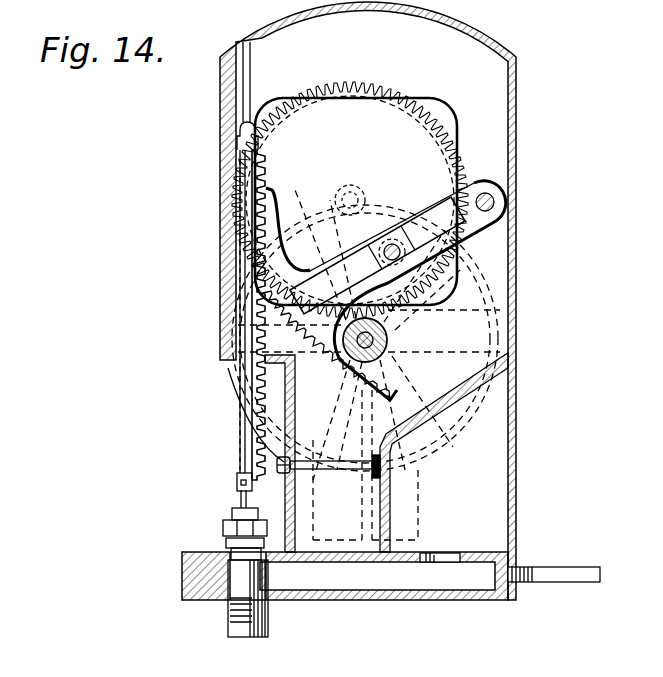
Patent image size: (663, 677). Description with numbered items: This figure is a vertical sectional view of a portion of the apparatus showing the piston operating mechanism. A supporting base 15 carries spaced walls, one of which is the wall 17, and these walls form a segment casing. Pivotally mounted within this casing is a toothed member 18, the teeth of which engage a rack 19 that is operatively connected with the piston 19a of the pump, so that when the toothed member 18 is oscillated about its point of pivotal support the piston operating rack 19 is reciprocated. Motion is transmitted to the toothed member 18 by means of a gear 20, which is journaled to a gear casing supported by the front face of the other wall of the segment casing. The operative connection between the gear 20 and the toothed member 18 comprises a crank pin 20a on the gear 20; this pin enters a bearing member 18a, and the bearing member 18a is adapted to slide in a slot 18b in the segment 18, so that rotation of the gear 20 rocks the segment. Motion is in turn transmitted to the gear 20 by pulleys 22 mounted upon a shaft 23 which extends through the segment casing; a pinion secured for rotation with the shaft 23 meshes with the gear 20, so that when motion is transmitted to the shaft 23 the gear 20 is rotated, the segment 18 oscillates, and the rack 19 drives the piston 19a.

The supporting base 15 is at (190, 566).
The wall of segment casing 17 is at (467, 60).
The toothed member 18 is at (455, 212).
The bearing member 18a is at (430, 205).
The slot 18b is at (315, 240).
The rack 19 is at (240, 437).
The piston 19a is at (243, 500).
The gear 20 is at (372, 87).
The crank pin 20a is at (437, 267).
The pulleys 22 is at (478, 424).
The shaft 23 is at (388, 340).